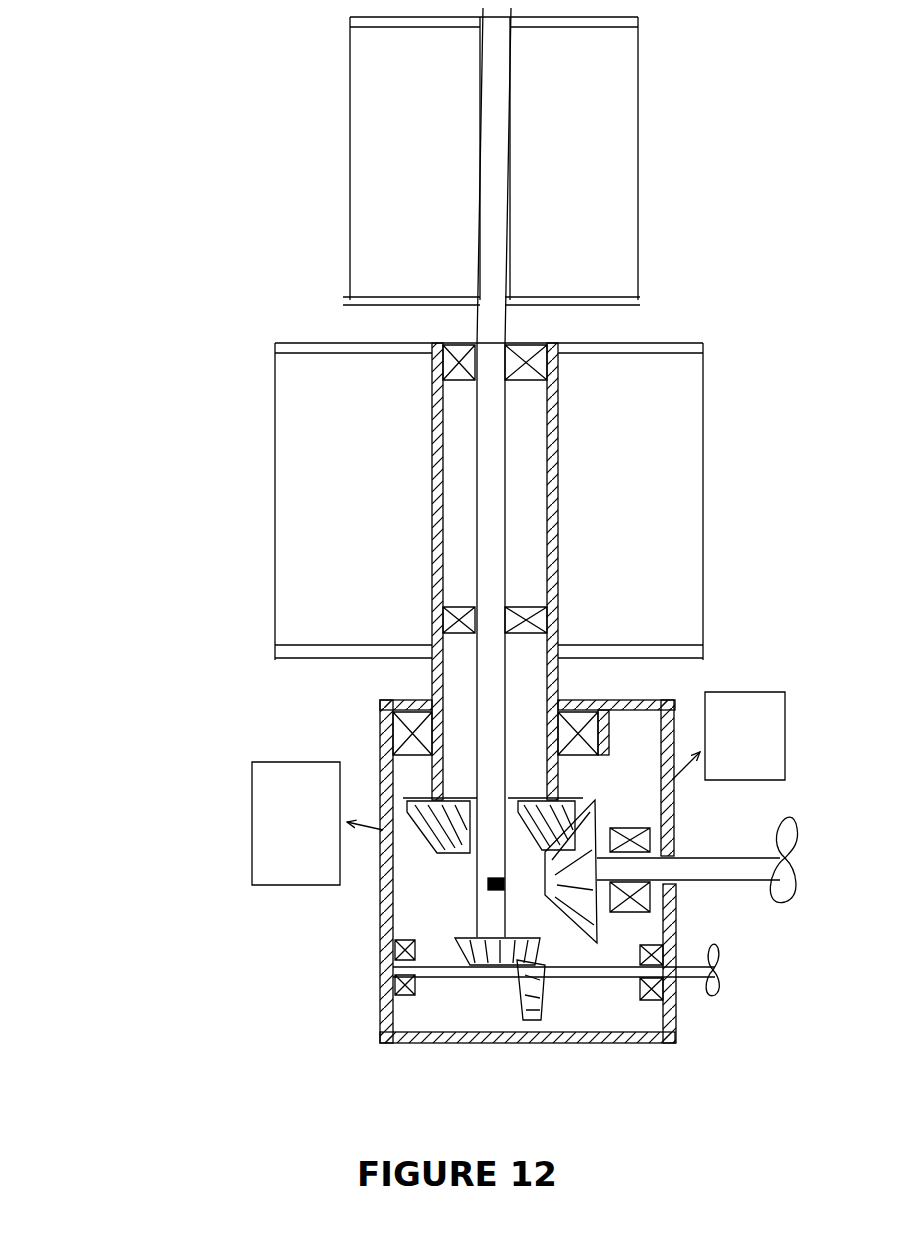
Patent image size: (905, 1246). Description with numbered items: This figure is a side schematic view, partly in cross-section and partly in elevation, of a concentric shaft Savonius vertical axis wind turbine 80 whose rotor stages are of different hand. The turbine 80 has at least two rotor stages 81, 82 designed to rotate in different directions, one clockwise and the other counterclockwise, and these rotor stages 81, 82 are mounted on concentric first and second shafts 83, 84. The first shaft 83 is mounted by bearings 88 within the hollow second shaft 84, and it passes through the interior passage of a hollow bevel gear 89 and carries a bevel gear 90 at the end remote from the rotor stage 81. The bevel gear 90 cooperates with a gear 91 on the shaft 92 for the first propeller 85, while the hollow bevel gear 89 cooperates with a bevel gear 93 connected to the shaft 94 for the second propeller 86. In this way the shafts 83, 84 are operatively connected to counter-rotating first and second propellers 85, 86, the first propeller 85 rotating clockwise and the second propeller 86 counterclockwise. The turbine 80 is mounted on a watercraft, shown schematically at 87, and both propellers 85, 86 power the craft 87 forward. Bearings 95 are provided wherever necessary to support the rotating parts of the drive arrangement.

The Savonius wind turbine 80 is at (133, 256).
The rotor stage 81 is at (677, 88).
The rotor stage 82 is at (725, 335).
The first shaft 83 is at (493, 317).
The second shaft 84 is at (432, 538).
The first propeller 85 is at (722, 955).
The second propeller 86 is at (787, 822).
The watercraft 87 is at (262, 790).
The bearings 88 is at (523, 600).
The hollow bevel gear 89 is at (578, 800).
The bevel gear 90 is at (470, 940).
The gear 91 is at (540, 990).
The shaft 92 is at (595, 978).
The bevel gear 93 is at (598, 818).
The shaft 94 is at (700, 872).
The bearings 95 is at (380, 714).